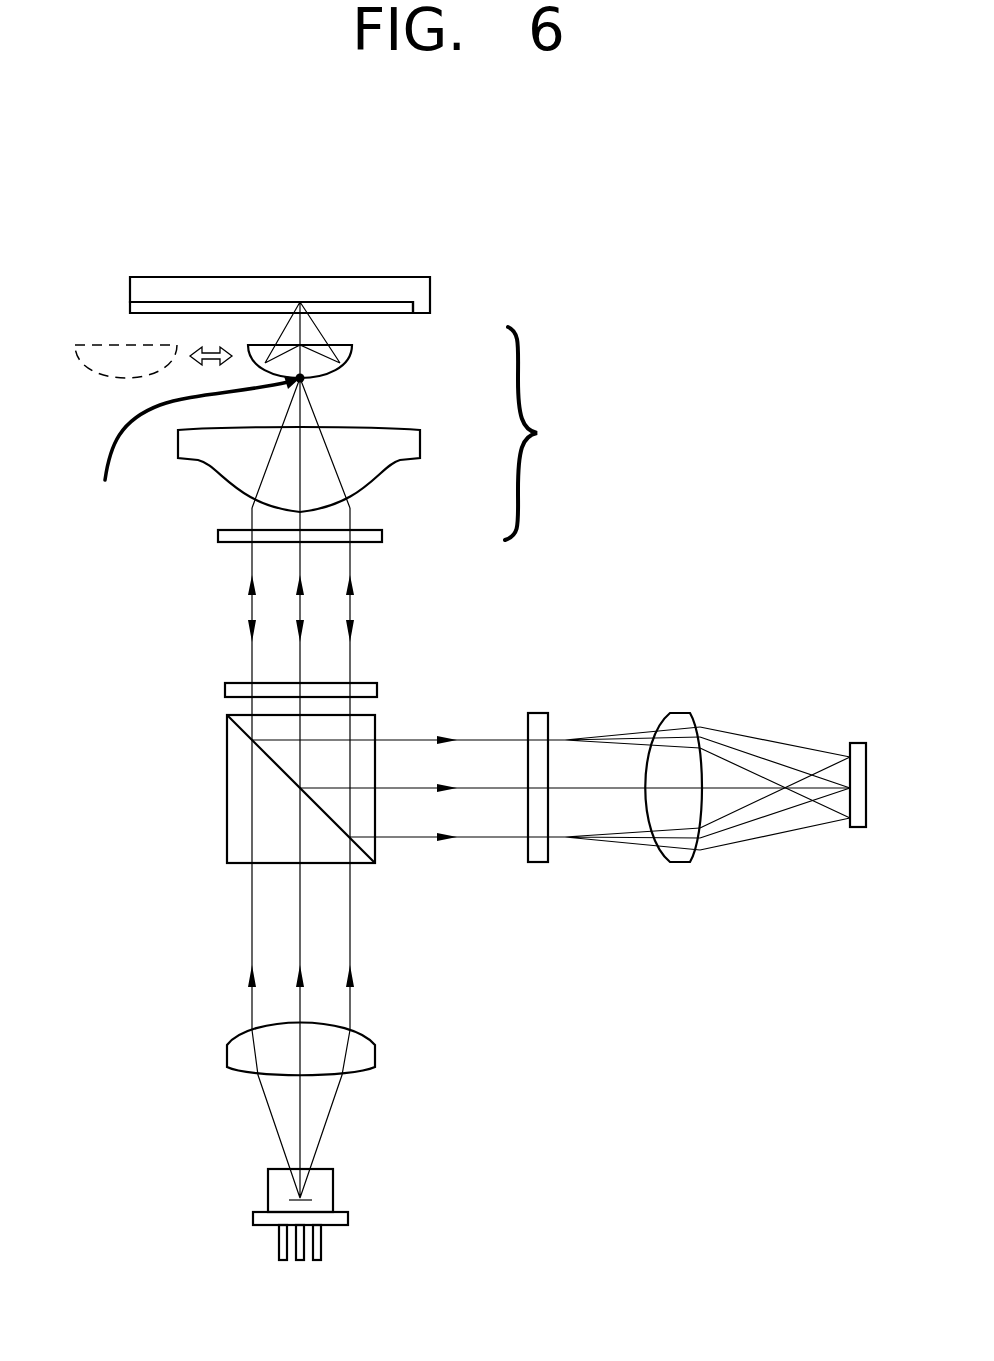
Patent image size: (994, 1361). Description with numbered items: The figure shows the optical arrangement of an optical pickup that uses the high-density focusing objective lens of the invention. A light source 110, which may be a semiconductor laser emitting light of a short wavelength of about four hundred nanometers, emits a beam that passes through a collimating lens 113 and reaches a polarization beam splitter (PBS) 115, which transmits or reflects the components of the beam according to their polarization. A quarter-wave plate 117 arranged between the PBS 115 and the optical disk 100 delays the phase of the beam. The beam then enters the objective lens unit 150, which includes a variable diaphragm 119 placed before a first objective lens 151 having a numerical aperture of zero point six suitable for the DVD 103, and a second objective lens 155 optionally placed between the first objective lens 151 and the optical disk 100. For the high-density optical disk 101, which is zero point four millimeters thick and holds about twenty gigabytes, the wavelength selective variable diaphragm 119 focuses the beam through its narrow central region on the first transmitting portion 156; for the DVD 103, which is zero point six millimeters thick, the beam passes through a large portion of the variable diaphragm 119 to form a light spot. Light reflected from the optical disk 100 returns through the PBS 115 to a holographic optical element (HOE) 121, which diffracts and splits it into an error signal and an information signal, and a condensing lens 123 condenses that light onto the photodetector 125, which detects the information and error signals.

The optical disk 100 is at (290, 267).
The high-density optical disk 101 is at (130, 302).
The digital versatile disk (DVD) 103 is at (130, 277).
The light source 110 is at (333, 1190).
The collimating lens 113 is at (377, 1055).
The polarization beam splitter (PBS) 115 is at (362, 866).
The λ/4 plate 117 is at (378, 688).
The variable diaphragm 119 is at (382, 535).
The holographic optical element (HOE) 121 is at (539, 713).
The condensing lens 123 is at (679, 713).
The photodetector 125 is at (858, 743).
The objective lens unit 150 is at (332, 434).
The first objective lens 151 is at (420, 445).
The second objective lens 155 is at (350, 369).
The first transmitting portion 156 is at (190, 447).